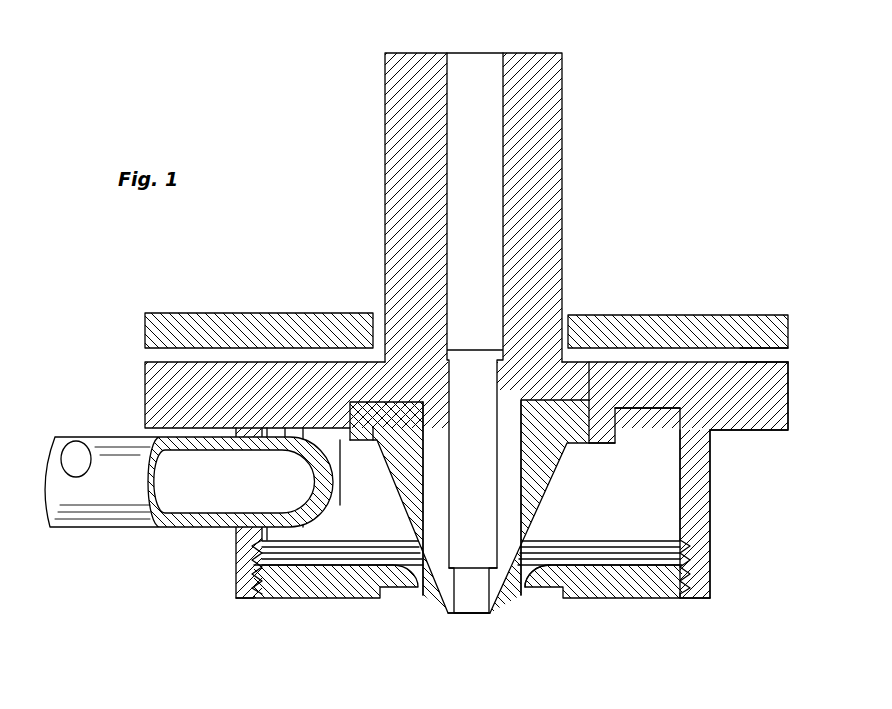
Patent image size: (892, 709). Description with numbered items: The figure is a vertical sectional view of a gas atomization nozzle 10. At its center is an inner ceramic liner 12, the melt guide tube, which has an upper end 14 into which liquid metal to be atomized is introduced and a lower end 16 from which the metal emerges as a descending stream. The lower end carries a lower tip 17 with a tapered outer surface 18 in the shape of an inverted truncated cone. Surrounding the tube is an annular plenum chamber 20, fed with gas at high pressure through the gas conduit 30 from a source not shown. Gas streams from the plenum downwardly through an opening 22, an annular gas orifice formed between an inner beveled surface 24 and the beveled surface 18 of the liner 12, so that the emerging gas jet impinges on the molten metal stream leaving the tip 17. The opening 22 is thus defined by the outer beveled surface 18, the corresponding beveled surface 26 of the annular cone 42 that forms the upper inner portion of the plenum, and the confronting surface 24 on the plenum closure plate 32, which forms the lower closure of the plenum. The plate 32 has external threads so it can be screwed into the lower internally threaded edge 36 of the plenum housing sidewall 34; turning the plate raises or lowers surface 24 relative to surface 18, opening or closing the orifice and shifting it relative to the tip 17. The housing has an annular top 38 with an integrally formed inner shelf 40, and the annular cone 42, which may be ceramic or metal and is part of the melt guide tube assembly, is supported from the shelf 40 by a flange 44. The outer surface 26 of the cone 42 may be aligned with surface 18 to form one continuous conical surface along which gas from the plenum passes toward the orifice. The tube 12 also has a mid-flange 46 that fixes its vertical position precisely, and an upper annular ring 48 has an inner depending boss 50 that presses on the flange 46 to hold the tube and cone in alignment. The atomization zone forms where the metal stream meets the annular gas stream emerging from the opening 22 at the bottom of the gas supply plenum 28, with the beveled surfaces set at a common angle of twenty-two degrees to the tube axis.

The nozzle 10 is at (422, 341).
The inner ceramic liner 12 is at (385, 103).
The upper end 14 is at (535, 53).
The lower end 16 is at (506, 614).
The lower tip 17 is at (452, 614).
The tapered outer surface 18 is at (512, 600).
The plenum chamber 20 is at (466, 304).
The opening 22 is at (426, 606).
The inner beveled surface 24 is at (386, 600).
The beveled surface 26 is at (553, 492).
The gas supply plenum 28 is at (795, 355).
The gas conduit 30 is at (122, 437).
The plenum closure plate 32 is at (280, 600).
The plenum housing sidewall 34 is at (716, 498).
The lower internally threaded edge 36 is at (712, 565).
The annular top 38 is at (760, 432).
The inner shelf 40 is at (589, 447).
The annular cone 42 is at (410, 396).
The flange 44 is at (365, 441).
The mid-flange 46 is at (590, 315).
The upper annular ring 48 is at (680, 315).
The inner depending boss 50 is at (365, 440).